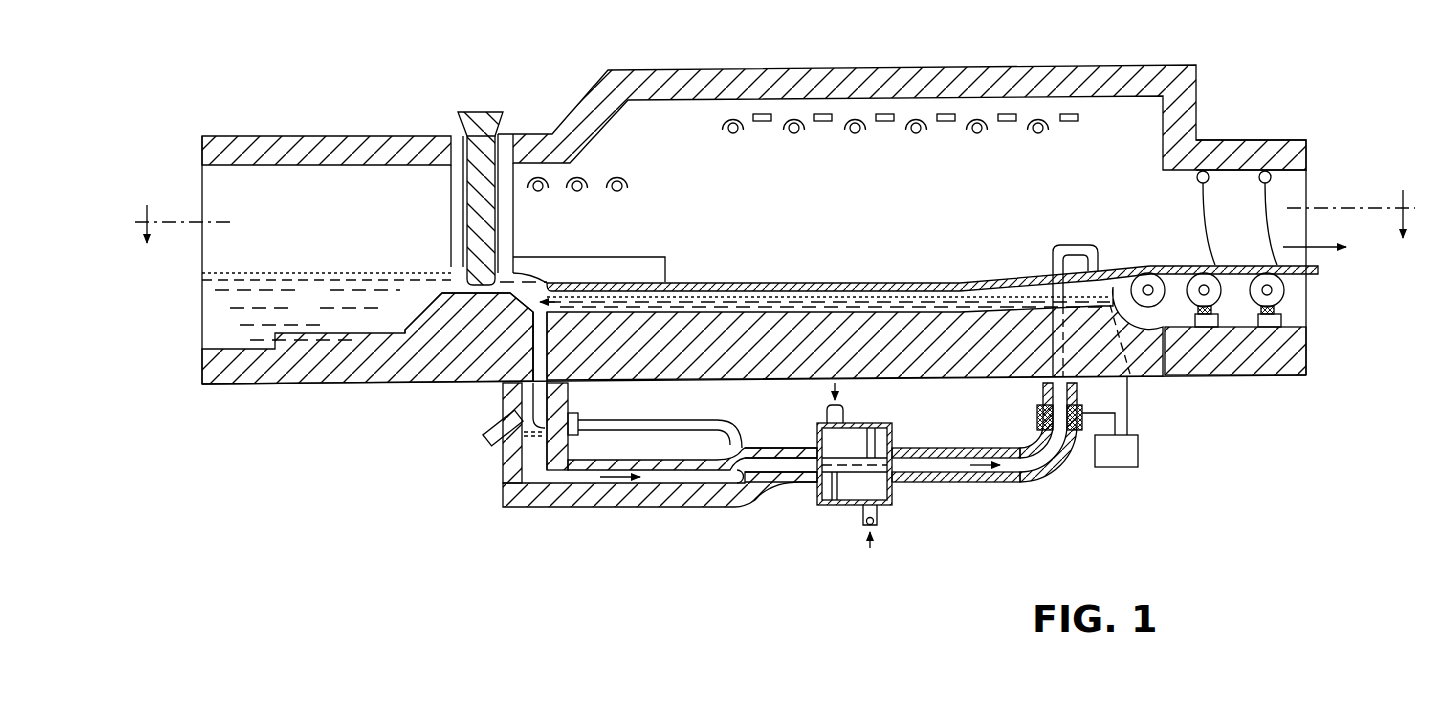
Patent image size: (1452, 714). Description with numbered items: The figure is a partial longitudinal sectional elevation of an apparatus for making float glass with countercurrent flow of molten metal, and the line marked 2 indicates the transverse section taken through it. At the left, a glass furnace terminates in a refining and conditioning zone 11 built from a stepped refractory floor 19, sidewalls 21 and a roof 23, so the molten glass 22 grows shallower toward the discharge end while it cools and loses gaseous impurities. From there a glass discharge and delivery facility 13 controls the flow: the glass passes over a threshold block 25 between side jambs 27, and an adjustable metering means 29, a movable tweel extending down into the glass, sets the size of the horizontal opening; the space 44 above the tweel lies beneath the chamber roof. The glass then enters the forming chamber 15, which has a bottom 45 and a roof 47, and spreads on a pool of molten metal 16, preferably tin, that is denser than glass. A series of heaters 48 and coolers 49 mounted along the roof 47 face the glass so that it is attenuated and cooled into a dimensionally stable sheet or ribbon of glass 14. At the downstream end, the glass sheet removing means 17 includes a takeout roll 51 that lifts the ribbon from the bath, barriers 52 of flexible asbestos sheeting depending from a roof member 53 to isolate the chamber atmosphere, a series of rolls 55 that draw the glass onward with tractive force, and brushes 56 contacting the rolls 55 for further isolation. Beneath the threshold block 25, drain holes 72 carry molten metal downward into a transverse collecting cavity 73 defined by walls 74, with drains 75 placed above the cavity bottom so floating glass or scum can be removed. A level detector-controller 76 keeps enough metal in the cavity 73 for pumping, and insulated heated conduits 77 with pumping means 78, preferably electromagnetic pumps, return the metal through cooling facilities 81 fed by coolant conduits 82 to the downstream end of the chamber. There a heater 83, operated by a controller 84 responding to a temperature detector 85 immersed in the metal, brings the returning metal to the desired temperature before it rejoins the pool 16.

The section line 2- 2 is at (775, 206).
The refining and conditioning zone 11 is at (348, 247).
The glass discharge and delivery facility 13 is at (481, 103).
The sheet or ribbon of glass 14 is at (822, 283).
The forming chamber 15 is at (902, 192).
The pool of molten metal 16 is at (895, 290).
The glass sheet removing means 17 is at (1256, 167).
The refractory floor 19 is at (258, 384).
The sidewalls 21 is at (322, 240).
The liquid 22 is at (215, 314).
The roof 23 is at (395, 136).
The threshold block 25 is at (440, 384).
The side jamb 27 is at (451, 200).
The adjustable metering means 29 is at (490, 220).
The slot 44 is at (660, 258).
The bottom 45 is at (1140, 360).
The roof 47 is at (912, 75).
The heaters 48 is at (577, 191).
The coolers 49 is at (1010, 122).
The takeout roll 51 is at (1150, 273).
The barriers 52 is at (1262, 203).
The roof member 53 is at (1262, 147).
The rolls 55 is at (1258, 282).
The brushes 56 is at (1253, 312).
The drain holes 72 is at (547, 368).
The transverse collecting cavity 73 is at (570, 413).
The walls 74 is at (503, 495).
The drains 75 is at (487, 436).
The level detector-controller 76 is at (578, 437).
The conduits 77 is at (975, 448).
The pumping means 78 is at (757, 448).
The cooling facilities 81 is at (817, 495).
The coolant conduits 82 is at (878, 512).
The heater 83 is at (1037, 415).
The controller 84 is at (1138, 450).
The temperature detector 85 is at (1112, 266).